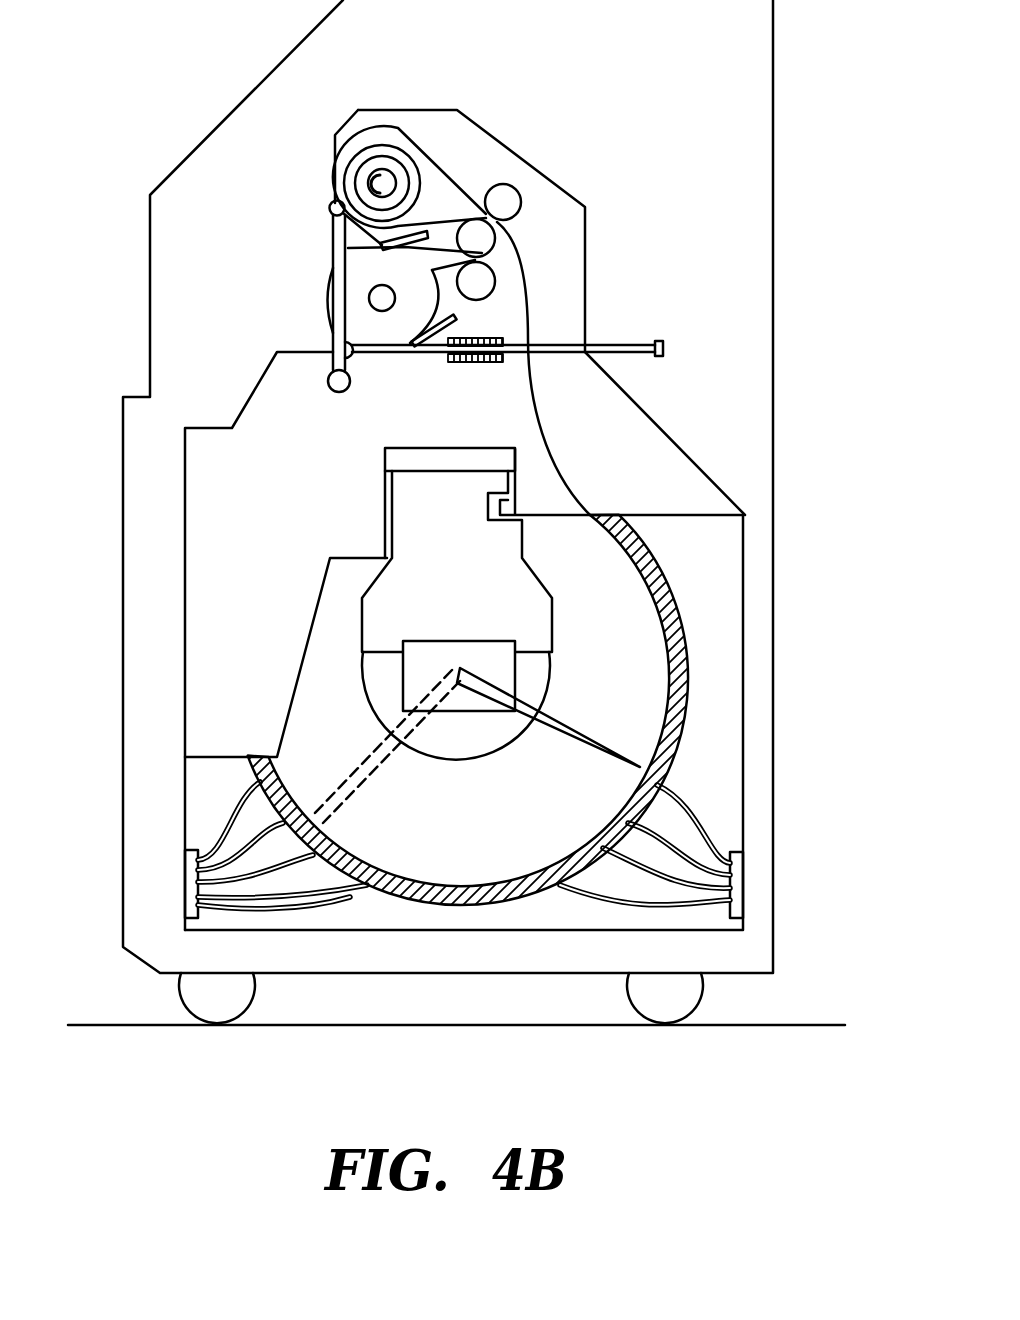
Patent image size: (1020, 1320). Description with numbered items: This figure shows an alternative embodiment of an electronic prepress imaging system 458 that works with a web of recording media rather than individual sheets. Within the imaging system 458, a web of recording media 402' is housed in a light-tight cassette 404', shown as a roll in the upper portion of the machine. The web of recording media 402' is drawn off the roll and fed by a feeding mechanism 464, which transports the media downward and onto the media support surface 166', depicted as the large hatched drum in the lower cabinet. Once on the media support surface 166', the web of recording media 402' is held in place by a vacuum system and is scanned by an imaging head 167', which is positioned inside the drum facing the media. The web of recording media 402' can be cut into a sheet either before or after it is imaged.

The imaging system 458 is at (775, 265).
The light-tight cassette 404' is at (409, 136).
The web of recording media 402' is at (286, 278).
The feeding mechanism 464 is at (510, 197).
The imaging head 167' is at (477, 697).
The media support surface 166' is at (468, 710).